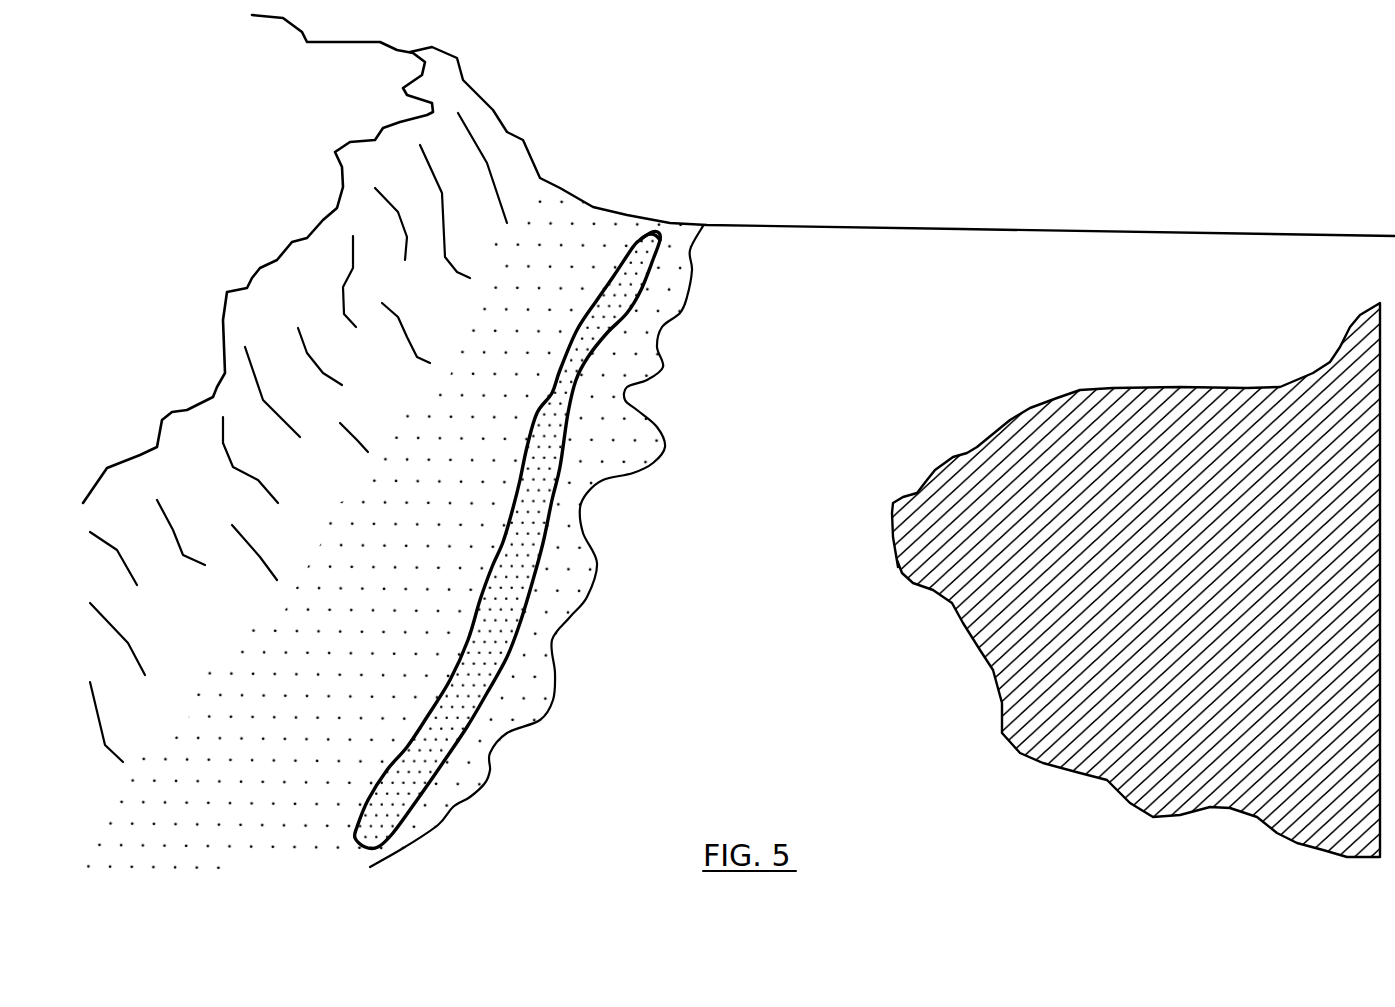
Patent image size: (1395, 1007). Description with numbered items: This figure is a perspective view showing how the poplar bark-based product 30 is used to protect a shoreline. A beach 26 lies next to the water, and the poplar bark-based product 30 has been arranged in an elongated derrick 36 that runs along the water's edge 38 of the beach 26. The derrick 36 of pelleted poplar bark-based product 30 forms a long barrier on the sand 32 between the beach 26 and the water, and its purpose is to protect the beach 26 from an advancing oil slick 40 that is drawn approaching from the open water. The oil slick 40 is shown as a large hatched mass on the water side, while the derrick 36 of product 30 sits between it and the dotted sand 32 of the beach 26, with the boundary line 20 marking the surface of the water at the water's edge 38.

The water surface / horizon line 20 is at (867, 263).
The beach 26 is at (543, 480).
The poplar bark-based product 30 is at (666, 233).
The sand 32 is at (573, 237).
The elongated derrick 36 is at (553, 457).
The water's edge 38 is at (693, 270).
The oil slick 40 is at (1200, 403).